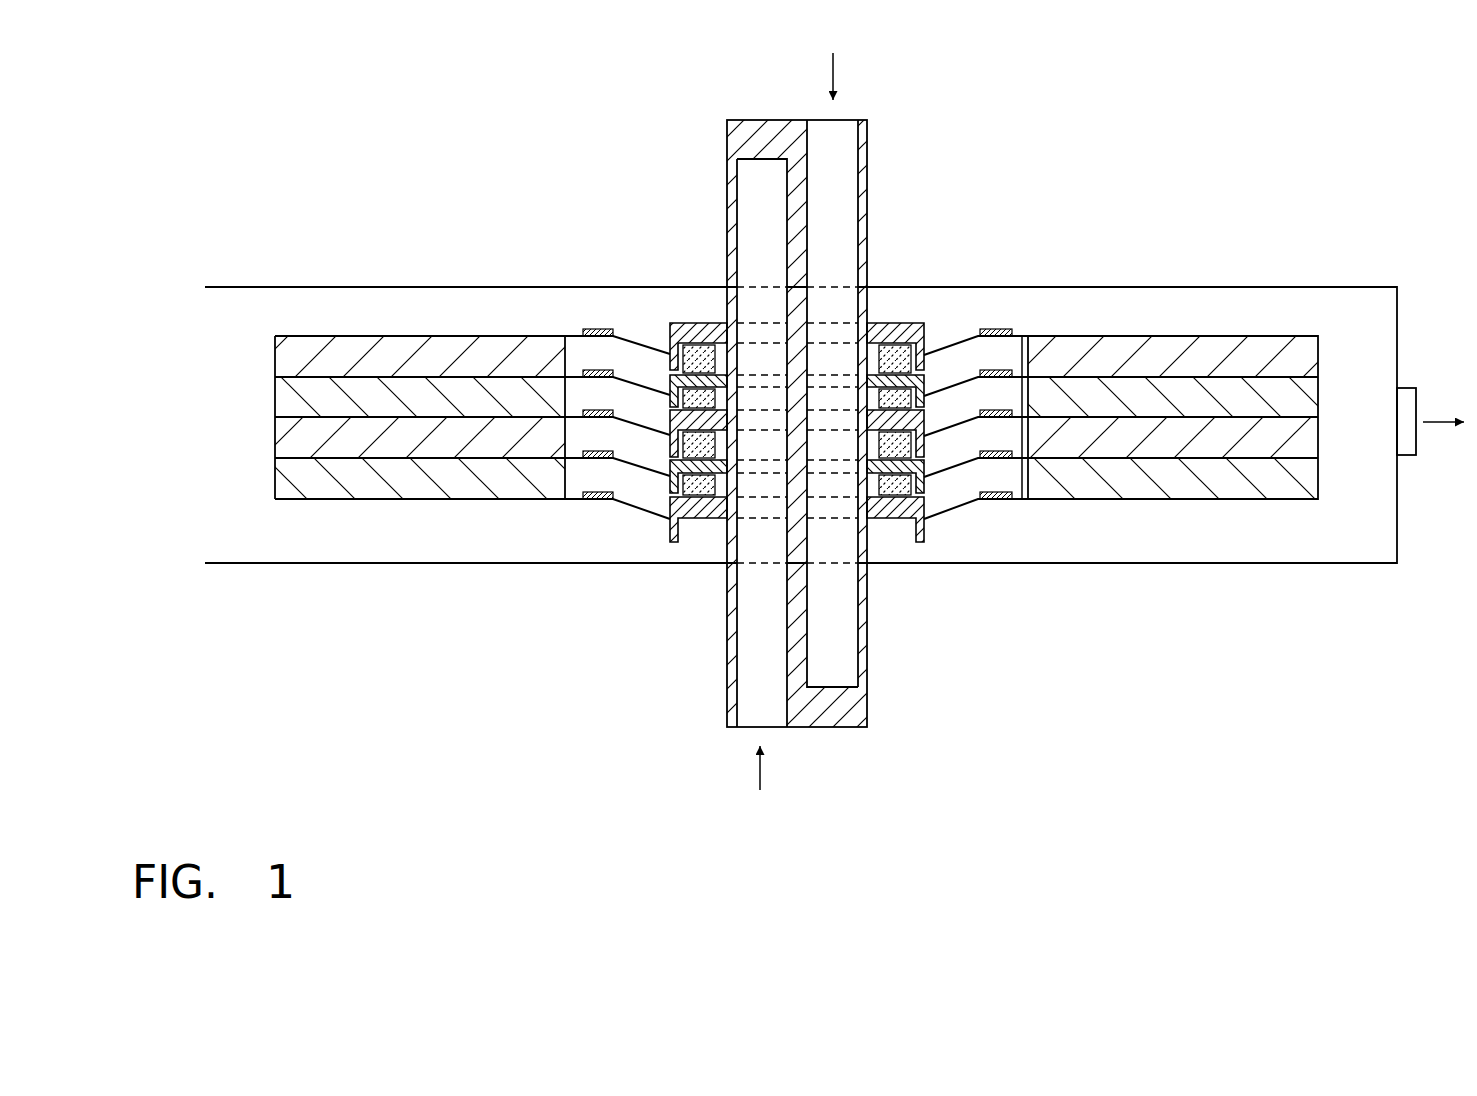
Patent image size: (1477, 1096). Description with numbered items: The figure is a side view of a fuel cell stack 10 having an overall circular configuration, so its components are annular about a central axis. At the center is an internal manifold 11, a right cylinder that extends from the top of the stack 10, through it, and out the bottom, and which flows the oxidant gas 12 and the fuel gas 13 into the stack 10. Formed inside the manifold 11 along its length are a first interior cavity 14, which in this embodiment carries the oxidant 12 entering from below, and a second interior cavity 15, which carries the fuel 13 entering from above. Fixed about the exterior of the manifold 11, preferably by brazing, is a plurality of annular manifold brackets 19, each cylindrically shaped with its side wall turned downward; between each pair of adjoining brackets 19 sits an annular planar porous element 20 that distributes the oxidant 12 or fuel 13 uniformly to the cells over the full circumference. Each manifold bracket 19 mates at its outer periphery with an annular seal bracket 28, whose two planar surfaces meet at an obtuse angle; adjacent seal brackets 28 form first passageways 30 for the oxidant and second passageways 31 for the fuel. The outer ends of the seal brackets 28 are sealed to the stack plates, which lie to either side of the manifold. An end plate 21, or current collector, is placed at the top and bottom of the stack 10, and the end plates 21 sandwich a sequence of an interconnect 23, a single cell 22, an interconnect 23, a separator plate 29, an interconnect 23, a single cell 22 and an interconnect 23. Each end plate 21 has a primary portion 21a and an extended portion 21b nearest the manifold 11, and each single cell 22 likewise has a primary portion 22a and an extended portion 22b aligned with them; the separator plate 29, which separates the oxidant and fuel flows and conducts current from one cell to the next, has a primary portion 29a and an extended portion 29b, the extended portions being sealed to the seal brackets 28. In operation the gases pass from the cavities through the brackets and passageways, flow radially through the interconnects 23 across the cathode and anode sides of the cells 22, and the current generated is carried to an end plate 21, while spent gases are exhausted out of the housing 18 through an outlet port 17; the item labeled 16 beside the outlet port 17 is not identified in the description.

The fuel cell stack 10 is at (1146, 656).
The internal manifold 11 is at (727, 683).
The oxidant gas 12 is at (758, 778).
The fuel gas 13 is at (830, 68).
The first interior cavity 14 is at (739, 595).
The second interior cavity 15 is at (862, 176).
The electrical output 16 is at (1437, 424).
The outlet port 17 is at (1406, 387).
The housing 18 is at (222, 566).
The manifold bracket 19 is at (695, 318).
The porous element 20 is at (876, 300).
The end plate 21 is at (313, 329).
The primary portion 21a is at (470, 333).
The extended portion 21b is at (578, 331).
The single cell 22 is at (311, 371).
The primary portion 22a is at (338, 462).
The extended portion 22b is at (605, 468).
The interconnect 23 is at (376, 391).
The seal bracket 28 is at (950, 342).
The separator plate 29 is at (311, 412).
The primary portion 29a is at (1284, 416).
The extended portion 29b is at (1022, 492).
The first passageway 30 is at (627, 342).
The second passageway 31 is at (977, 396).